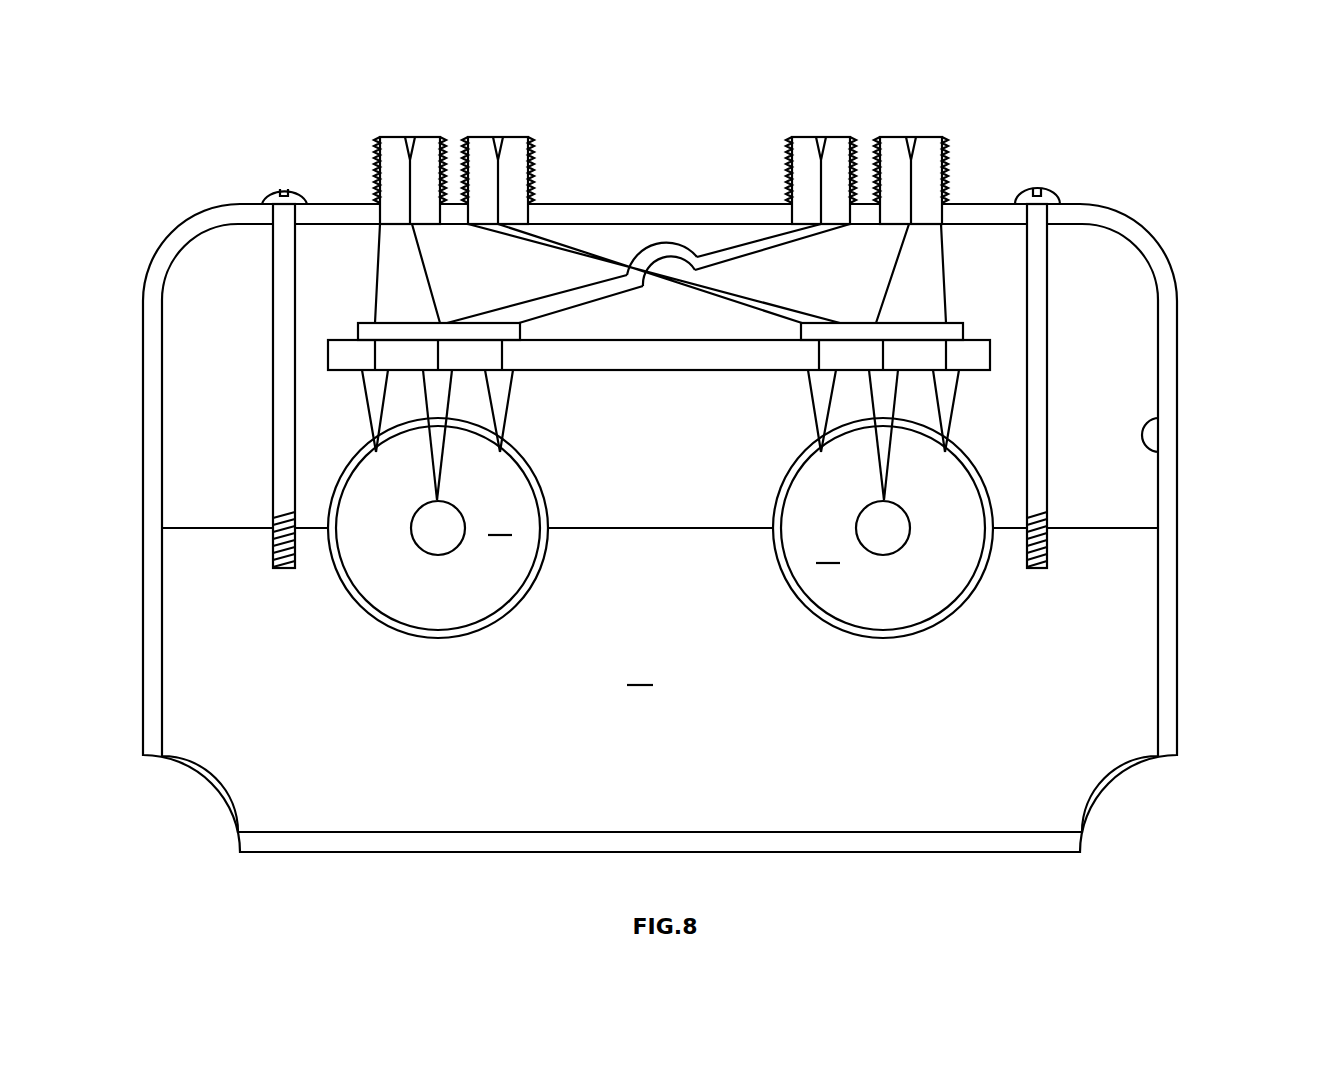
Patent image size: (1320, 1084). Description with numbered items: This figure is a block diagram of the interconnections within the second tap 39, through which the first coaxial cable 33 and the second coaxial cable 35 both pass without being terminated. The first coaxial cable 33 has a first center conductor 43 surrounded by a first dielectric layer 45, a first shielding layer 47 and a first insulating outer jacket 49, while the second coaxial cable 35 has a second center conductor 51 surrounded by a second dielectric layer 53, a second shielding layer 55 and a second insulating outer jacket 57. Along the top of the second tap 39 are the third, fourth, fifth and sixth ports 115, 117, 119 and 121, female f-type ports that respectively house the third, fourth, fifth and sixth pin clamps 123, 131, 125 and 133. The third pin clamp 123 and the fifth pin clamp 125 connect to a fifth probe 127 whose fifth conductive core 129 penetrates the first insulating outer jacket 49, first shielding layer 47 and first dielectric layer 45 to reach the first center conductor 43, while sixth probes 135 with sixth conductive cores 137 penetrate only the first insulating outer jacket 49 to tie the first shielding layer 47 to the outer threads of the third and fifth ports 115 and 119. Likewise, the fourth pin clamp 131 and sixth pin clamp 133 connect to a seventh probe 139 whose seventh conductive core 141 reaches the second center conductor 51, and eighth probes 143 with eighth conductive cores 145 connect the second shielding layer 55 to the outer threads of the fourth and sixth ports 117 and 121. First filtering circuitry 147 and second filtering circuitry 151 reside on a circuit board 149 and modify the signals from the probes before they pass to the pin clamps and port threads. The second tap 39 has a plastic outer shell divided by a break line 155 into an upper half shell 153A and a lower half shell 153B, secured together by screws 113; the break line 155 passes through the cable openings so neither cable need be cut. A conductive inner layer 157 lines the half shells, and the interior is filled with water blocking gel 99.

The second tap 39 is at (1168, 146).
The screws 113 is at (273, 316).
The third port 115 is at (374, 172).
The fourth port 117 is at (534, 160).
The fifth port 119 is at (786, 173).
The sixth port 121 is at (948, 166).
The third pin clamp 123 is at (405, 147).
The fifth pin clamp 125 is at (816, 150).
The fourth pin clamp 131 is at (500, 150).
The sixth pin clamp 133 is at (912, 150).
The first filtering circuitry 147 is at (522, 332).
The circuit board 149 is at (648, 352).
The second filtering circuitry 151 is at (800, 333).
The fifth probe 127 is at (447, 443).
The fifth conductive core 129 is at (440, 394).
The sixth probes 135 is at (368, 408).
The sixth conductive cores 137 is at (375, 385).
The seventh probe 139 is at (889, 443).
The seventh conductive core 141 is at (885, 393).
The eighth probes 143 is at (813, 408).
The eighth conductive cores 145 is at (815, 384).
The first coaxial cable 33 is at (398, 656).
The second coaxial cable 35 is at (878, 657).
The first center conductor 43 is at (445, 546).
The first dielectric layer 45 is at (500, 522).
The first shielding layer 47 is at (541, 501).
The first insulating outer jacket 49 is at (530, 464).
The second center conductor 51 is at (880, 546).
The second dielectric layer 53 is at (828, 550).
The second shielding layer 55 is at (812, 604).
The second insulating outer jacket 57 is at (780, 569).
The water blocking gel 99 is at (640, 672).
The upper half shell 153A is at (1168, 362).
The lower half shell 153B is at (1168, 618).
The break line 155 is at (683, 526).
The conductive inner layer 157 is at (1159, 452).